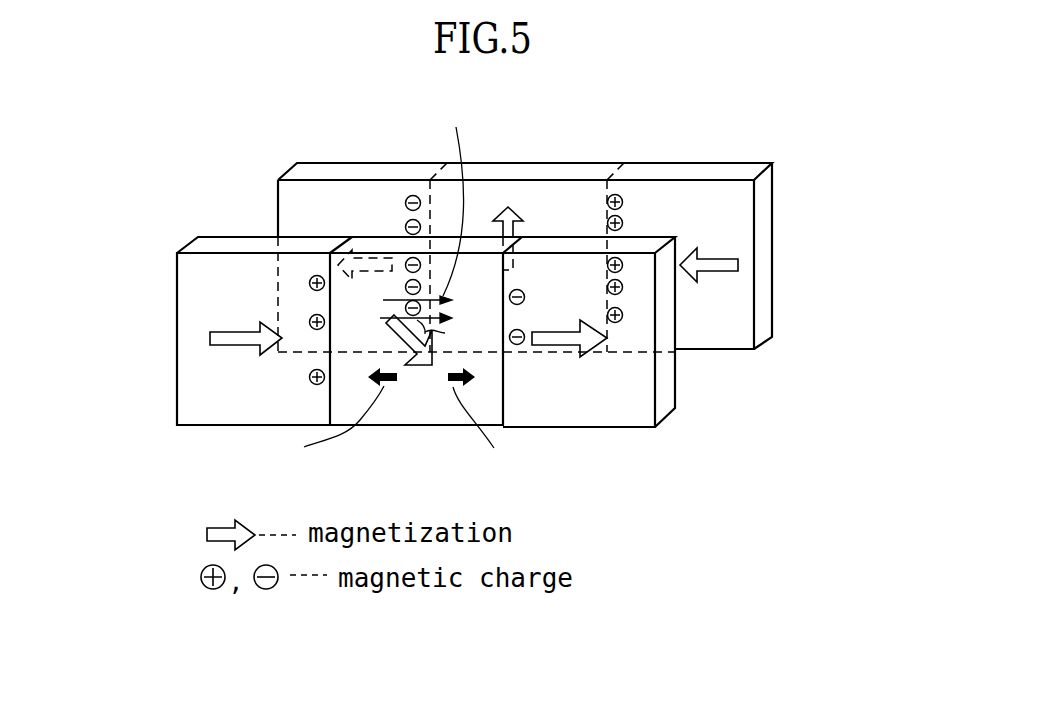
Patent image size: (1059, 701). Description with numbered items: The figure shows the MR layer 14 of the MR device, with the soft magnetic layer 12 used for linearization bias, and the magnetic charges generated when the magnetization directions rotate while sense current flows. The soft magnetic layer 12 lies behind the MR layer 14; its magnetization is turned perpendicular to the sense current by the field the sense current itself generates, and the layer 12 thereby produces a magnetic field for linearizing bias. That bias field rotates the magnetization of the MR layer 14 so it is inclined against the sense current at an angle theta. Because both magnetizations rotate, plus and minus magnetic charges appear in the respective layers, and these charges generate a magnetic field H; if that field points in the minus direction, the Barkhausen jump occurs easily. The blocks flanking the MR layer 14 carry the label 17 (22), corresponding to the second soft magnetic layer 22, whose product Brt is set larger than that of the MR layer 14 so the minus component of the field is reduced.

The soft magnetic layer 12 is at (680, 167).
The MR layer 14 is at (416, 425).
The hard magnetic bias layer 17 is at (190, 290).
The second soft magnetic layer 22 is at (662, 402).